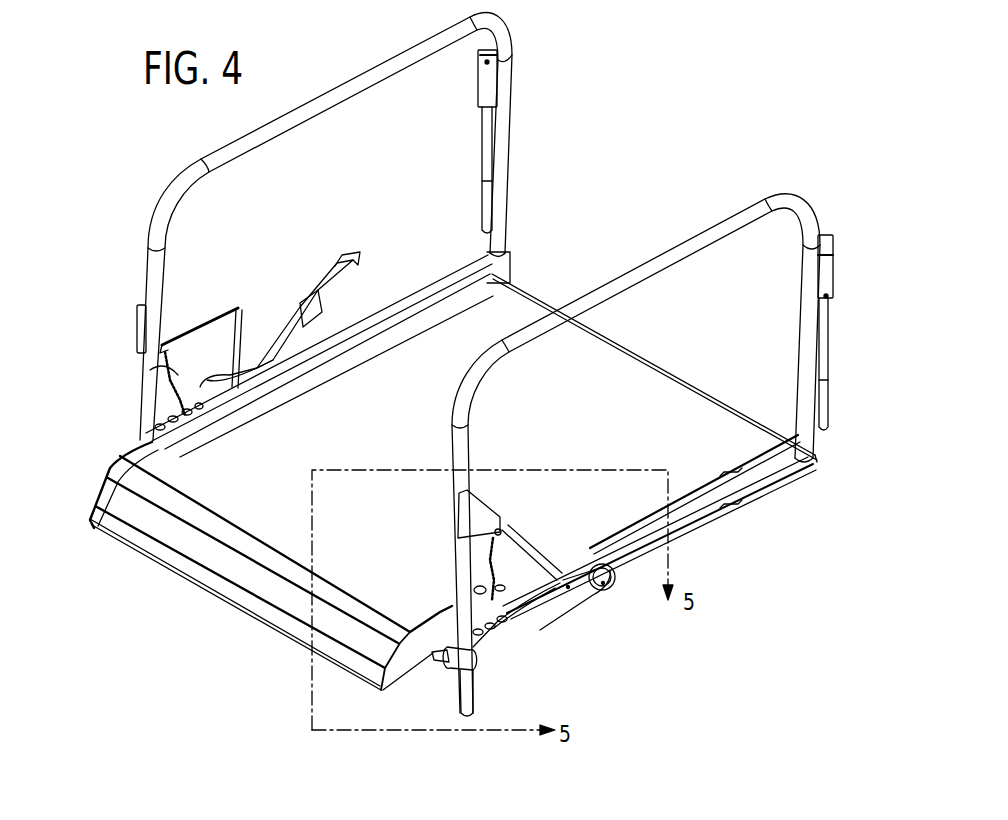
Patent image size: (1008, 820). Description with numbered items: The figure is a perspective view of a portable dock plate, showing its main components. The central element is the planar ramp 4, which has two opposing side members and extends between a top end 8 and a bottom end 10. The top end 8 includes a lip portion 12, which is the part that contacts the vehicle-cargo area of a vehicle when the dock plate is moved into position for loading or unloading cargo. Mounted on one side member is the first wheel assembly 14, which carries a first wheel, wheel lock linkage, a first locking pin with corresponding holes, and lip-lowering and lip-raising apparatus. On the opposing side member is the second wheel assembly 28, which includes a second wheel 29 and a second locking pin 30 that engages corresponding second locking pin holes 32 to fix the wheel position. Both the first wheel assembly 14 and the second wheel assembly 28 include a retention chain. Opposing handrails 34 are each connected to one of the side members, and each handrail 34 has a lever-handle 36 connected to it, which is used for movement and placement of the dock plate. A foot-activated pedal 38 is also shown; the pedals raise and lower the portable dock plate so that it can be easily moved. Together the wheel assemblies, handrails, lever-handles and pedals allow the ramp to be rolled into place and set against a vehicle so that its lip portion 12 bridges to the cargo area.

The planar ramp 4 is at (260, 447).
The top end 8 is at (287, 527).
The bottom end 10 is at (698, 442).
The lip portion 12 is at (292, 602).
The first wheel assembly 14 is at (255, 367).
The second wheel assembly 28 is at (580, 597).
The second wheel 29 is at (592, 572).
The second locking pin 30 is at (466, 696).
The second locking pin holes 32 is at (487, 630).
The handrail 34 is at (350, 85).
The lever-handle 36 is at (482, 135).
The foot-activated pedal 38 is at (353, 272).